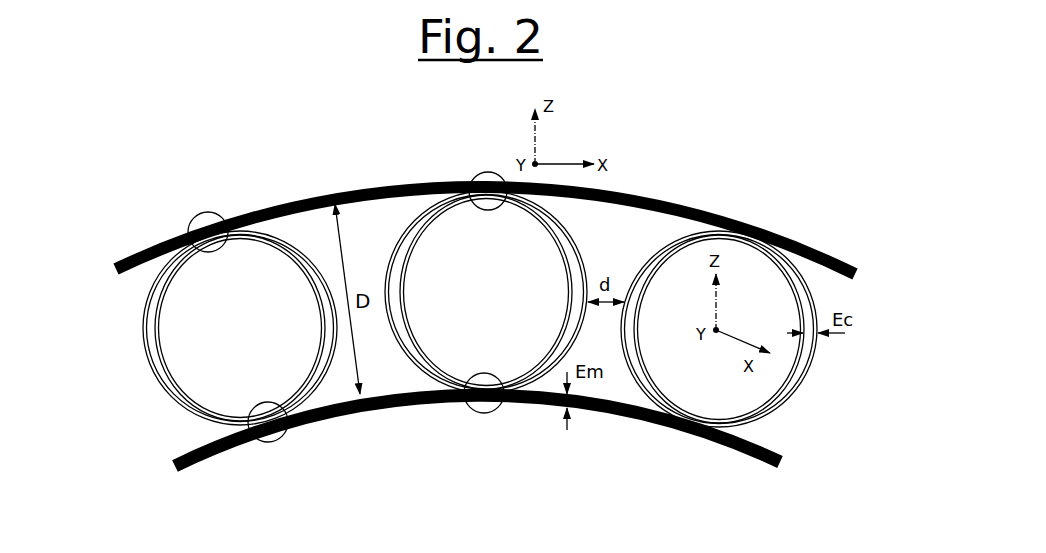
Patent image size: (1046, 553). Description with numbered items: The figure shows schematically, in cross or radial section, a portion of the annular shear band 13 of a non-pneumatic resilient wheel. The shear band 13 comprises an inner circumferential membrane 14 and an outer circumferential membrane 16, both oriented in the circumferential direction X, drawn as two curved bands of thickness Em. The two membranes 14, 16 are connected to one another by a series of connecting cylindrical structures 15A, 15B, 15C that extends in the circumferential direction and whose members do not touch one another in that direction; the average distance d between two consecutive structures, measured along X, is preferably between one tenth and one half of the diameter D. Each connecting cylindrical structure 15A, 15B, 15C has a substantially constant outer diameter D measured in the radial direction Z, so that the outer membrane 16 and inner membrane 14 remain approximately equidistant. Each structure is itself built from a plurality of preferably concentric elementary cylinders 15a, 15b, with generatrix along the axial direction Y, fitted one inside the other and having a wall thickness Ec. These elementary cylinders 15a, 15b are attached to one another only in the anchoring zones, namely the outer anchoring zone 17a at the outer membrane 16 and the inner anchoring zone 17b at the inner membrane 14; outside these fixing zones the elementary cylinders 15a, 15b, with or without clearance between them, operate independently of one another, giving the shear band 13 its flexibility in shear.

The annular shear band 13 is at (684, 176).
The inner circumferential membrane 14 is at (527, 403).
The outer circumferential membrane 16 is at (316, 197).
The connecting cylindrical structure 15A is at (201, 361).
The connecting cylindrical structure 15B is at (414, 368).
The connecting cylindrical structure 15C is at (757, 428).
The elementary cylinder 15a is at (145, 332).
The elementary cylinder 15b is at (168, 370).
The outer anchoring zone 17a is at (219, 255).
The inner anchoring zone 17b is at (269, 399).